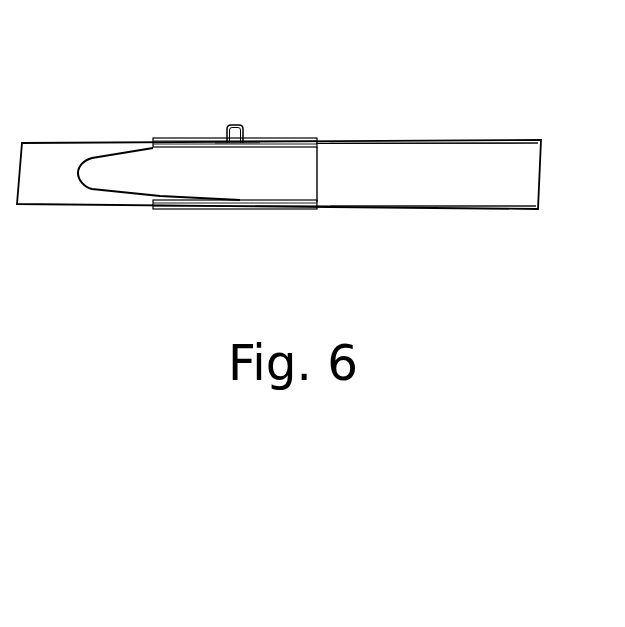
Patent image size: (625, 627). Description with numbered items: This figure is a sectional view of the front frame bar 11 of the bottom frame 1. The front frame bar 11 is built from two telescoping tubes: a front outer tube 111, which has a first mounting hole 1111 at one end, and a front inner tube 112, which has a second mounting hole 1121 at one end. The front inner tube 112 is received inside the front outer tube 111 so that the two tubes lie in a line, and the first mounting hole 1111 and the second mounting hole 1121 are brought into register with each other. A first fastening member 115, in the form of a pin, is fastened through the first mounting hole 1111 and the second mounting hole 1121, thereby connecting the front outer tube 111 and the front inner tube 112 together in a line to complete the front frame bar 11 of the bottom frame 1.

The bottom frame 1 is at (279, 112).
The front frame bar 11 is at (279, 127).
The front outer tube 111 is at (495, 142).
The first mounting hole 1111 is at (243, 140).
The front inner tube 112 is at (173, 136).
The second mounting hole 1121 is at (227, 140).
The first fastening member 115 is at (235, 125).